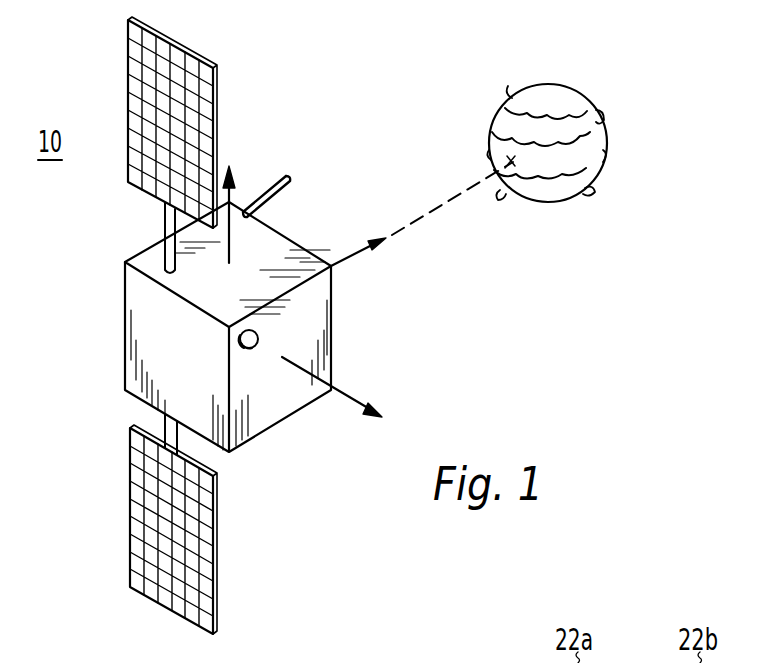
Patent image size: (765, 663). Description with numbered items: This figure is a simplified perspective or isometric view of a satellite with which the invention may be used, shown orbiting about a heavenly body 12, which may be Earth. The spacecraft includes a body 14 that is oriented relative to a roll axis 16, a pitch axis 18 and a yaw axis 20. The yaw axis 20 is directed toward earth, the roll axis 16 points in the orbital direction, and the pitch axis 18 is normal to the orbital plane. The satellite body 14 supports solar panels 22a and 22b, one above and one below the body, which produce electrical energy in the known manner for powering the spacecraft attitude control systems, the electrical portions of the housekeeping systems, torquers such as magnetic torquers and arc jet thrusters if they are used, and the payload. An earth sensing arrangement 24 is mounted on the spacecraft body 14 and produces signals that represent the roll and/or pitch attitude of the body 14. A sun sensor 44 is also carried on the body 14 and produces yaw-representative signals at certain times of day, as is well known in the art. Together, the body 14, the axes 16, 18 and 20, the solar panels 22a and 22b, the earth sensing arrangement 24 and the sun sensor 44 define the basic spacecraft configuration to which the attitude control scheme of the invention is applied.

The heavenly body 12 is at (560, 204).
The body 14 is at (125, 330).
The roll axis 16 is at (343, 392).
The pitch axis 18 is at (235, 230).
The yaw axis 20 is at (352, 262).
The solar panel 22a is at (215, 115).
The solar panel 22b is at (215, 530).
The earth sensing arrangement 24 is at (295, 178).
The sun sensor 44 is at (258, 338).